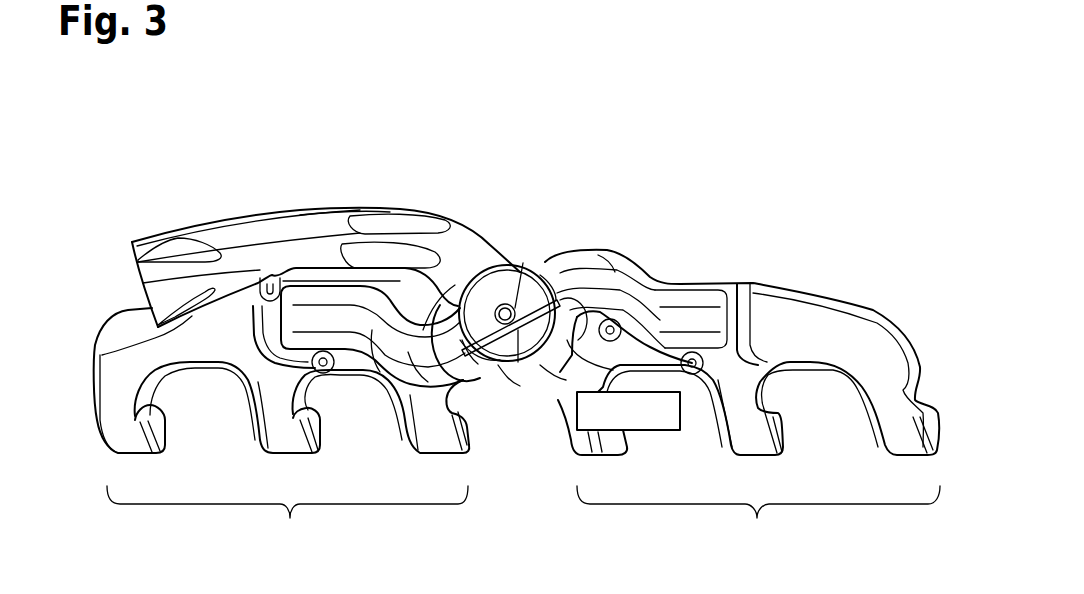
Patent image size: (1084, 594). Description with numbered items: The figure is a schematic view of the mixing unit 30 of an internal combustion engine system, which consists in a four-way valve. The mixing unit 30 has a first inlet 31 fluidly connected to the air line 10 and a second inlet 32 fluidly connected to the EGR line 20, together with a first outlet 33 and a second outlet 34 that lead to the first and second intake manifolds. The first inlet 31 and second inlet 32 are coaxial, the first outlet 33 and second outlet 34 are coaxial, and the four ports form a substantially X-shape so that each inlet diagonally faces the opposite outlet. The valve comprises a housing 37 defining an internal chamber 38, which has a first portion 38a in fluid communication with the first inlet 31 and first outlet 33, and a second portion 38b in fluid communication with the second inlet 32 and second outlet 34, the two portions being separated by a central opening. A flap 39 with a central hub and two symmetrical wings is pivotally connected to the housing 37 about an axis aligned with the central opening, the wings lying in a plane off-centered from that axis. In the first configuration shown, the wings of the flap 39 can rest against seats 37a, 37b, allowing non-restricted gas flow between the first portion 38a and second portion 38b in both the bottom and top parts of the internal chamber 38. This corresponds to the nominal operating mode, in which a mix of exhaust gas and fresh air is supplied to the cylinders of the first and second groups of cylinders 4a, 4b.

The air line 10 is at (387, 200).
The first group of cylinders 4a is at (307, 377).
The second group of cylinders 4b is at (742, 402).
The EGR line 20 is at (599, 431).
The mixing unit 30 is at (512, 247).
The first inlet 31 is at (462, 275).
The second inlet 32 is at (560, 375).
The first outlet 33 is at (410, 357).
The second outlet 34 is at (547, 280).
The housing 37 is at (530, 255).
The seat 37a is at (512, 380).
The seat 37b is at (586, 305).
The internal chamber 38 is at (517, 298).
The first portion 38a is at (373, 338).
The second portion 38b is at (604, 268).
The flap 39 is at (470, 346).